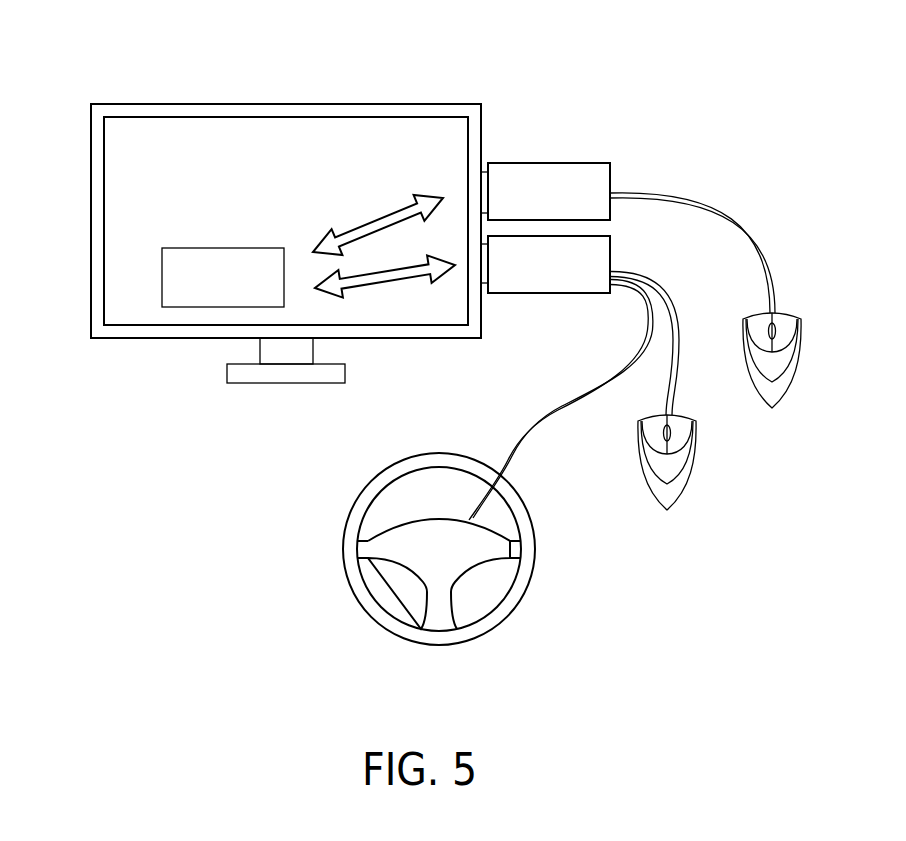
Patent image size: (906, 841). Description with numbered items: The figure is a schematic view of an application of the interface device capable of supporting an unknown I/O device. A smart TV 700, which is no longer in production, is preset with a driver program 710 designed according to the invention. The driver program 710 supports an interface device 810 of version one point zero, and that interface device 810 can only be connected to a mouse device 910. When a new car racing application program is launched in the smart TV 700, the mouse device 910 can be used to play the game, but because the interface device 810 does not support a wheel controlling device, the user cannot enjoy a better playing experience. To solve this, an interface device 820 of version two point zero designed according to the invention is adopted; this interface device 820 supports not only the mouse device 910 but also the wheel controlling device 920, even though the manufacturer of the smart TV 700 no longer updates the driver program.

The smart TV 700 is at (190, 103).
The driver program 710 is at (162, 265).
The interface device 810 is at (610, 176).
The interface device 820 is at (610, 255).
The mouse device 910 is at (752, 393).
The wheel controlling device 920 is at (535, 542).